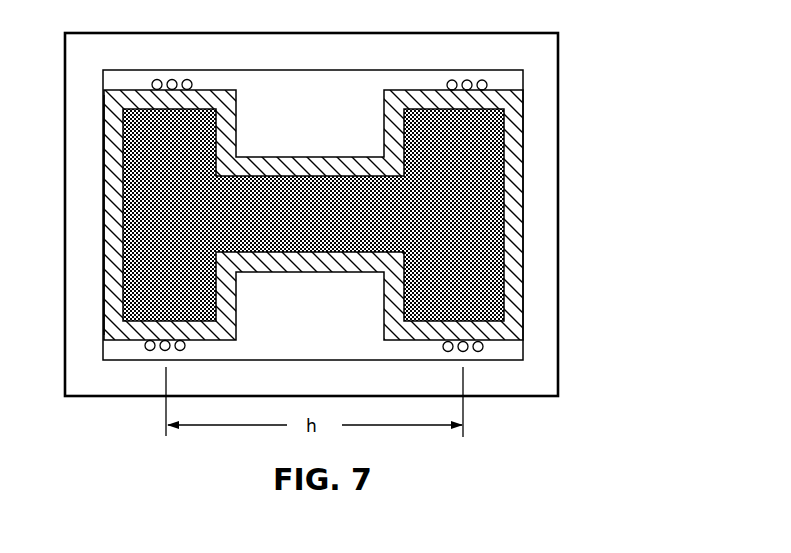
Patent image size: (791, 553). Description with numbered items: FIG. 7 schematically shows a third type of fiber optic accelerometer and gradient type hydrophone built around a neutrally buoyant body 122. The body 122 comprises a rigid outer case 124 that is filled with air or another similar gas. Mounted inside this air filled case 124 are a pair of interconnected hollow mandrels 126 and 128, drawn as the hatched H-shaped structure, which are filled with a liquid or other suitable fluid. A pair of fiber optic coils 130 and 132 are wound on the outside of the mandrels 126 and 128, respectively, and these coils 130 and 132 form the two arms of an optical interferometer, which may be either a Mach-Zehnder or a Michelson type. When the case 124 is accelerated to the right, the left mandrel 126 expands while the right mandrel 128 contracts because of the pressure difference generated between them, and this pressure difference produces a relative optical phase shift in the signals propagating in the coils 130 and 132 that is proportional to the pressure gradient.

The neutrally buoyant body 122 is at (570, 205).
The rigid outer case 124 is at (558, 283).
The hollow mandrel 126 is at (103, 278).
The hollow mandrel 128 is at (523, 150).
The fiber optic coil 130 is at (146, 362).
The fiber optic coil 132 is at (479, 366).